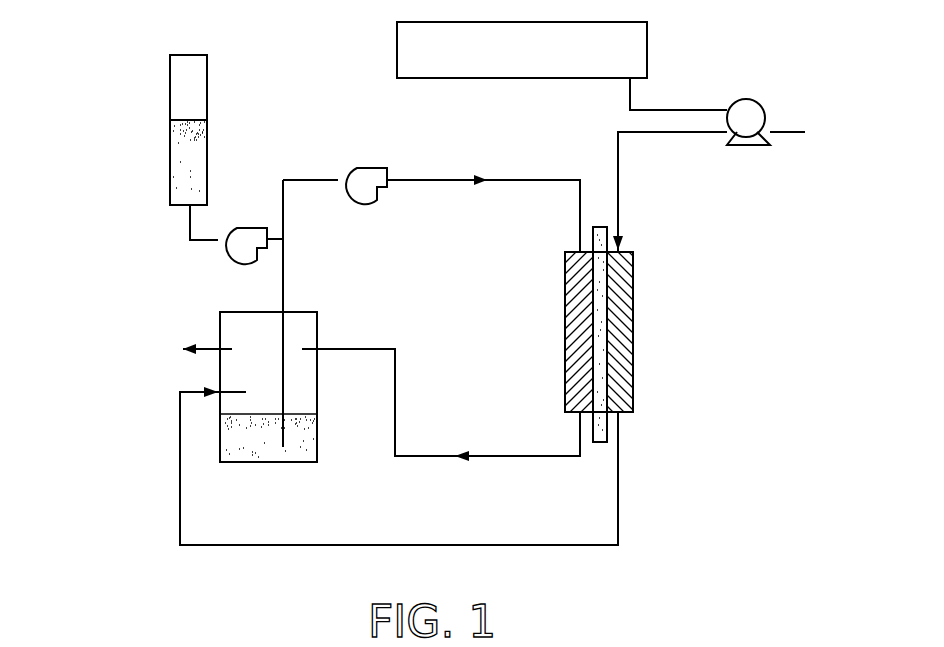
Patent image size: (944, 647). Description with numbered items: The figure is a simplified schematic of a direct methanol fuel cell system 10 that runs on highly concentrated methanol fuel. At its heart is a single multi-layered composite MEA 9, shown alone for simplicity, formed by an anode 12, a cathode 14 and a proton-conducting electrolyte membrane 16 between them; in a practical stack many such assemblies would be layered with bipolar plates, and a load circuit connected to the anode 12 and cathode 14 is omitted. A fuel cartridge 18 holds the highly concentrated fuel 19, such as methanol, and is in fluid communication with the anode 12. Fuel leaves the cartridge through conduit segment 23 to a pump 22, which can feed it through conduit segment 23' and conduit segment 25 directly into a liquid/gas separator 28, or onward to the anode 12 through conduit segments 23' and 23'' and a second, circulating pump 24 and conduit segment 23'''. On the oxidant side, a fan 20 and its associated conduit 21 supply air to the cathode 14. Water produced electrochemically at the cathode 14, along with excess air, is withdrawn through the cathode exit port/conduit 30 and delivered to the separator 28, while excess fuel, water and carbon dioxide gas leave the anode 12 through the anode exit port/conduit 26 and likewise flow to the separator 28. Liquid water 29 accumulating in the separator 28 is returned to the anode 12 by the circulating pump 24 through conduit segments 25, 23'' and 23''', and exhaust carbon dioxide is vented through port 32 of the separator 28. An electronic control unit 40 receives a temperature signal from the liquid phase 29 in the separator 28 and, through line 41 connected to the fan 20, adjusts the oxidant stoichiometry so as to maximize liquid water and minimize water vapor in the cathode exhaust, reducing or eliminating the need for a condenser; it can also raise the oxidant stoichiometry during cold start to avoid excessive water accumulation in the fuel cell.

The DMFC system 10 is at (97, 222).
The fuel cartridge 18 is at (217, 80).
The highly concentrated fuel 19 is at (162, 150).
The conduit segment 23 is at (175, 205).
The pump 22 is at (210, 264).
The conduit segment 23' is at (257, 210).
The conduit segment 25 is at (289, 278).
The conduit segment 23'' is at (314, 145).
The circulating pump 24 is at (382, 204).
The conduit segment 23''' is at (483, 181).
The electronic control unit 40 is at (656, 49).
The line 41 is at (670, 101).
The fan 20 is at (751, 91).
The conduit 21 is at (677, 143).
The MEA 9 is at (645, 295).
The anode 12 is at (557, 353).
The cathode 14 is at (641, 343).
The proton-conducting electrolyte membrane 16 is at (599, 447).
The cathode exit port/conduit 30 is at (631, 440).
The anode exit port/conduit 26 is at (523, 462).
The liquid/gas separator 28 is at (323, 323).
The liquid water 29 is at (254, 463).
The port 32 is at (208, 356).